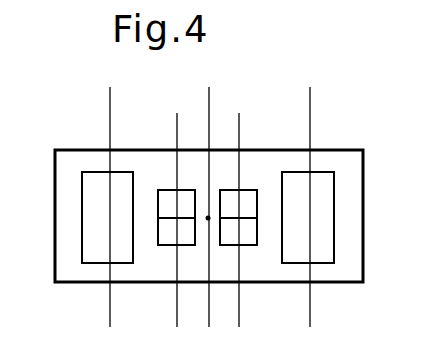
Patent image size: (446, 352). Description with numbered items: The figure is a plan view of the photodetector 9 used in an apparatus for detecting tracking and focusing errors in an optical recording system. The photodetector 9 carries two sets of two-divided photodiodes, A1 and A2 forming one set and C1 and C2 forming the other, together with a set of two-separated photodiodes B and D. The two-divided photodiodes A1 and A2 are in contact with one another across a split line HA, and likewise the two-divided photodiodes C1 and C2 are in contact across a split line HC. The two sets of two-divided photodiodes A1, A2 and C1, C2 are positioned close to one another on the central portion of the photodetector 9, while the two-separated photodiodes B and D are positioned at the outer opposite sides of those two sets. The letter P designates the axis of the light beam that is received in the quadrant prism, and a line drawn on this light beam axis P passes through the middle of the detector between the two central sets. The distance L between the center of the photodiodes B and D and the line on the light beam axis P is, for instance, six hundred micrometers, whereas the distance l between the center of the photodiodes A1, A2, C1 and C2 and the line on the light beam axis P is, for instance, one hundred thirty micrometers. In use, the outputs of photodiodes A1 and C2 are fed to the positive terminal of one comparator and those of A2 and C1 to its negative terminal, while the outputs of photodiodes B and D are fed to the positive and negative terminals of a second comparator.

The photodetector 9 is at (364, 173).
The two-separated photodiode B is at (85, 228).
The two-separated photodiode D is at (326, 219).
The two-divided photodiode A1 is at (173, 196).
The two-divided photodiode A2 is at (168, 238).
The two-divided photodiode C1 is at (246, 197).
The two-divided photodiode C2 is at (249, 238).
The light beam axis P is at (206, 233).
The split line HA is at (165, 213).
The split line HC is at (247, 214).
The distance L is at (209, 99).
The distance l is at (209, 127).